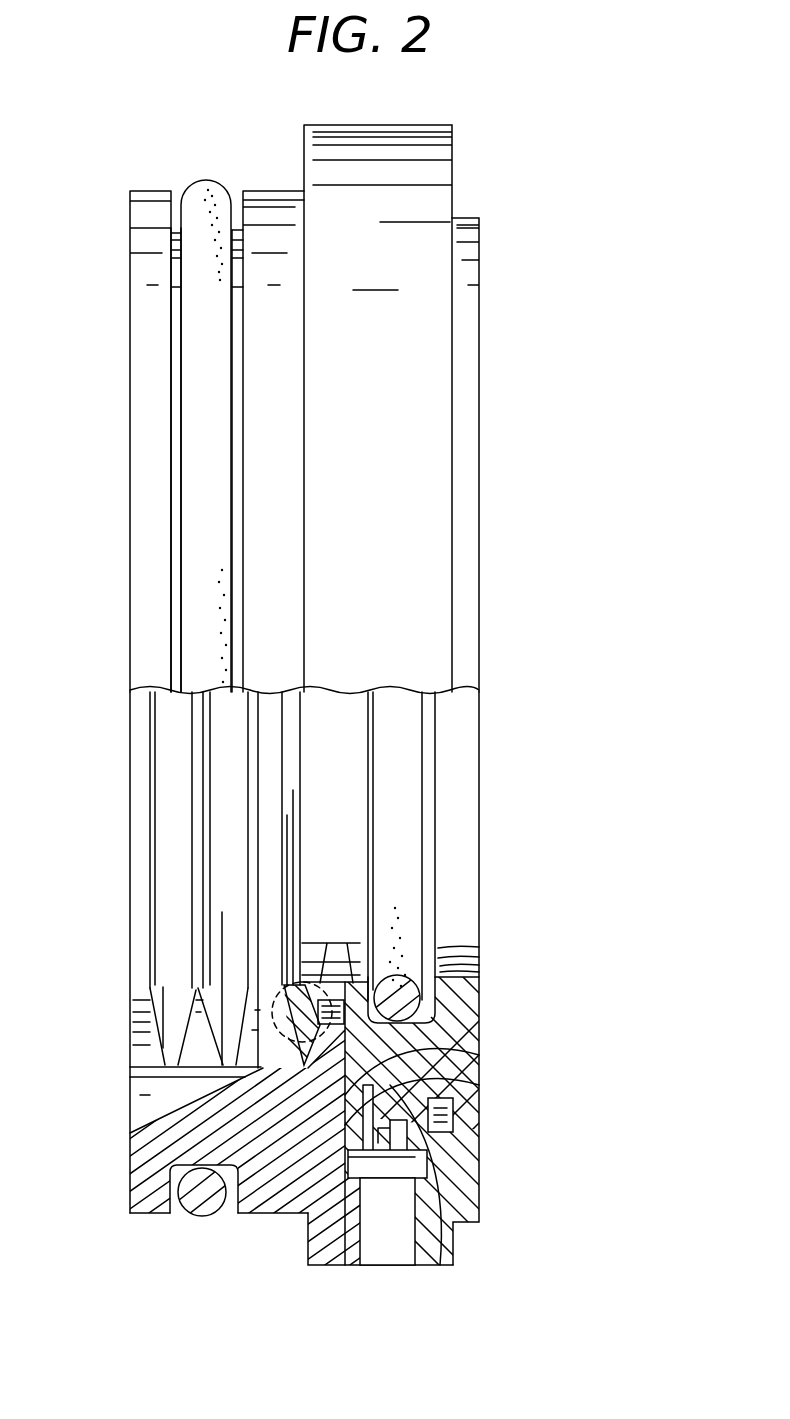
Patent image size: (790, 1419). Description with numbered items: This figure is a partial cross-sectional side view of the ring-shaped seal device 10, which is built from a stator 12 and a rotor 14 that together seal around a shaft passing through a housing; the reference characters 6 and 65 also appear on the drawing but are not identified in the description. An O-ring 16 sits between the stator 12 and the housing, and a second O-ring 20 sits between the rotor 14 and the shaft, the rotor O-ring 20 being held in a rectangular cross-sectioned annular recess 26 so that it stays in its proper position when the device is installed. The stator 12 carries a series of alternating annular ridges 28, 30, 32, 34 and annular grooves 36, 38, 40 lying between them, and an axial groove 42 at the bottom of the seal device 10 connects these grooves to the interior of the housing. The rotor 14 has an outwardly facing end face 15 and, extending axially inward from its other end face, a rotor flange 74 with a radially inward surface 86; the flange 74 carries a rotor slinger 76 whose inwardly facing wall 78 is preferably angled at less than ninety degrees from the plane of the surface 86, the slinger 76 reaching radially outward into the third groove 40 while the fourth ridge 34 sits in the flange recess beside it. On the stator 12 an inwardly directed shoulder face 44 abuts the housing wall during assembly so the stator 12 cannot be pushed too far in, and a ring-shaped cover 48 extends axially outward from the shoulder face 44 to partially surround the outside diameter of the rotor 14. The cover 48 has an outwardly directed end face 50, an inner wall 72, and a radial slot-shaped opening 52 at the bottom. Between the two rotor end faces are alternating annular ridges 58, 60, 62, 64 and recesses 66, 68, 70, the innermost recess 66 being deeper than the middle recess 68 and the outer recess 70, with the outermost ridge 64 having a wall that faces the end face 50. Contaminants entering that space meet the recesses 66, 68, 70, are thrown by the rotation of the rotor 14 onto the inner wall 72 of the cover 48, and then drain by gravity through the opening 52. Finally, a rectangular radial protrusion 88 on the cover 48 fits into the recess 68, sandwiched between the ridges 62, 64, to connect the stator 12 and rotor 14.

The detail circle 6 is at (285, 992).
The seal device 10 is at (518, 395).
The stator 12 is at (128, 480).
The rotor 14 is at (470, 870).
The outwardly facing end face 15 is at (479, 588).
The O-ring 16 is at (192, 178).
The O-ring 20 is at (435, 760).
The annular recess 26 is at (430, 945).
The annular ridge 28 is at (130, 975).
The annular ridge 30 is at (197, 712).
The annular ridge 32 is at (253, 703).
The fourth ridge 34 is at (338, 898).
The annular groove 36 is at (158, 872).
The annular groove 38 is at (220, 798).
The third groove 40 is at (277, 706).
The axial groove 42 is at (138, 1085).
The shoulder face 44 is at (310, 1240).
The ring-shaped cover 48 is at (348, 1308).
The outwardly directed end face 50 is at (455, 1252).
The radial slot-shaped opening 52 is at (388, 1265).
The annular ridge 58 is at (270, 1210).
The annular ridge 60 is at (445, 1045).
The annular ridge 62 is at (440, 1262).
The outermost ridge 64 is at (468, 1180).
The outer wall sleeve 65 is at (472, 218).
The innermost recess 66 is at (400, 1047).
The middle recess 68 is at (460, 1090).
The outer recess 70 is at (440, 1112).
The inner wall 72 is at (387, 1221).
The rotor flange 74 is at (383, 990).
The rotor slinger 76 is at (165, 1125).
The inwardly facing wall 78 is at (287, 770).
The radially inward surface 86 is at (352, 985).
The radial protrusion 88 is at (456, 1115).